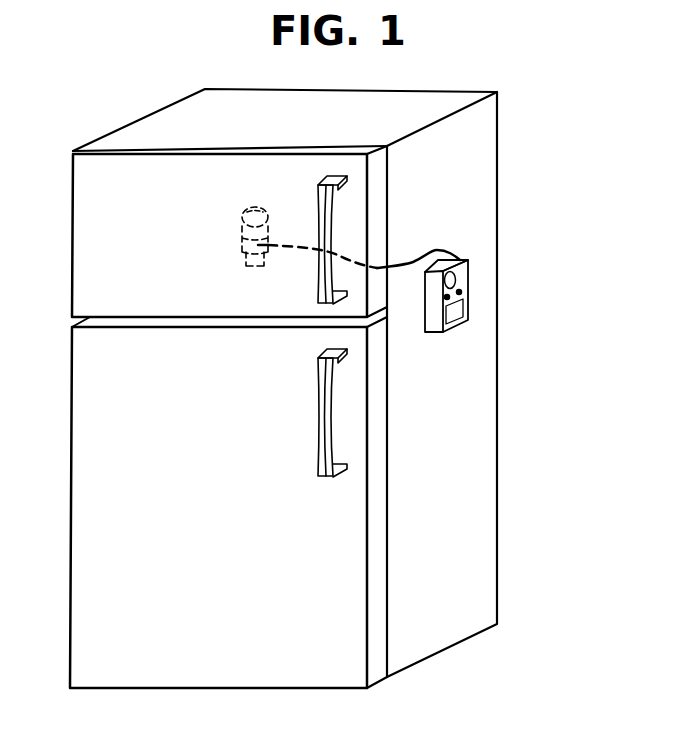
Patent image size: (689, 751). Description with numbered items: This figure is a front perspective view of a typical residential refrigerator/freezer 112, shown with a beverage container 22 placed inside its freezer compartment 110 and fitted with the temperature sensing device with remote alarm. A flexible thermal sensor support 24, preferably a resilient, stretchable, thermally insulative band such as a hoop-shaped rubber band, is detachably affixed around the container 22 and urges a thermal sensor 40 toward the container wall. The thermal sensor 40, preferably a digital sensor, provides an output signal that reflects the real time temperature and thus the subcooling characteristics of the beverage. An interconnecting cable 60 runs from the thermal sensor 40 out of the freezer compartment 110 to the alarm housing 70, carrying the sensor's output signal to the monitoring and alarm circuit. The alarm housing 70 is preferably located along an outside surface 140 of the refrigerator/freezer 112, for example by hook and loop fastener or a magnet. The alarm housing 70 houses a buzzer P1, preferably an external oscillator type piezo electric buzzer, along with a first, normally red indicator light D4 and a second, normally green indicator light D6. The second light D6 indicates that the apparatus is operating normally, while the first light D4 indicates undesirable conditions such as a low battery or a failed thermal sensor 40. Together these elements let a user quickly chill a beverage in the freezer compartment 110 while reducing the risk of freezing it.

The container 22 is at (248, 208).
The flexible thermal sensor support 24 is at (241, 244).
The thermal sensor 40 is at (252, 262).
The interconnecting cable 60 is at (436, 250).
The alarm housing 70 is at (467, 273).
The buzzer P1 is at (464, 279).
The first indicator light D4 is at (461, 294).
The second indicator light D6 is at (447, 300).
The freezer compartment 110 is at (356, 202).
The refrigerator/freezer 112 is at (498, 466).
The outside surface 140 is at (466, 443).